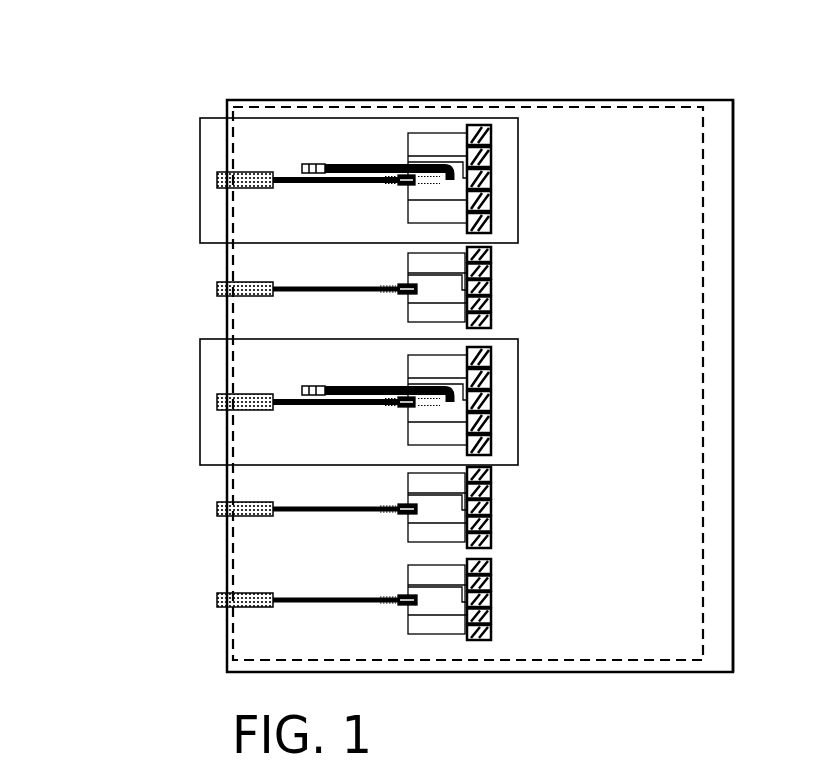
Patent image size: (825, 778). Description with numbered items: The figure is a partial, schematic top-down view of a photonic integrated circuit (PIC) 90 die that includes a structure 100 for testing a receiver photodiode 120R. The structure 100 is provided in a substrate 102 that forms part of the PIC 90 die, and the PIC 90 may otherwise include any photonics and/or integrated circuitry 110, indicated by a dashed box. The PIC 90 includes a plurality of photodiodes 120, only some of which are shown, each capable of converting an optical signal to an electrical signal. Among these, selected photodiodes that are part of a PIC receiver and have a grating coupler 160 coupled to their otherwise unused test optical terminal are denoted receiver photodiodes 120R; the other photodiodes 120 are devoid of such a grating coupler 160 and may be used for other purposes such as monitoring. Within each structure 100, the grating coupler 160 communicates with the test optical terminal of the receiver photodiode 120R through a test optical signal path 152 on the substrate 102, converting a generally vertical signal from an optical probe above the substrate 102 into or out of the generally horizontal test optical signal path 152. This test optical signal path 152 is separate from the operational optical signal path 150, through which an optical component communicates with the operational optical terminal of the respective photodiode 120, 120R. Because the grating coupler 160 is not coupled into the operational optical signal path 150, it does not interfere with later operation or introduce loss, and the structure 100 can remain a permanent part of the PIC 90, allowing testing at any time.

The photonic integrated circuit (PIC) 90 is at (680, 98).
The substrate 102 is at (718, 475).
The integrated circuitry 110 is at (578, 107).
The structure 100 is at (199, 180).
The grating coupler 160 is at (300, 163).
The test optical signal path 152 is at (353, 388).
The operational optical signal path 150 is at (308, 404).
The receiver photodiode 120R is at (413, 184).
The photodiode 120 is at (403, 284).